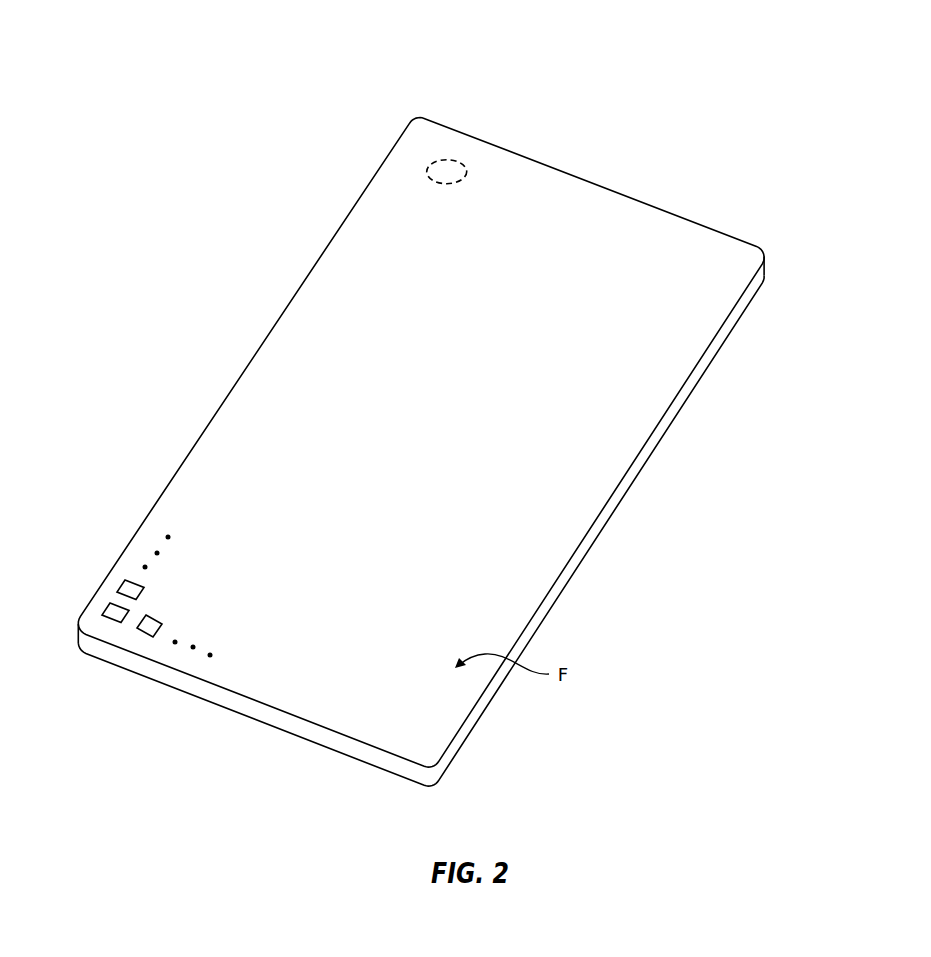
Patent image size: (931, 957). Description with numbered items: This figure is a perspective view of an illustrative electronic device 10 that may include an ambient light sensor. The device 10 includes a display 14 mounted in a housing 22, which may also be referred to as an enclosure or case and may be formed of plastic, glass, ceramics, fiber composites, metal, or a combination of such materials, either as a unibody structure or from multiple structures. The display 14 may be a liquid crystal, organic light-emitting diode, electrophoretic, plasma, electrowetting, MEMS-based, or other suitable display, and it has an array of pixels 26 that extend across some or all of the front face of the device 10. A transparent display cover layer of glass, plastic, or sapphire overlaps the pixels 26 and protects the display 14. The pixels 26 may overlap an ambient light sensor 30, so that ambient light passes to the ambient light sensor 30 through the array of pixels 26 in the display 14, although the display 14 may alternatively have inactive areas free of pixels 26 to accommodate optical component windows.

The electronic device 10 is at (436, 403).
The display 14 is at (302, 340).
The housing 22 is at (769, 266).
The pixels 26 is at (122, 586).
The ambient light sensor 30 is at (446, 159).